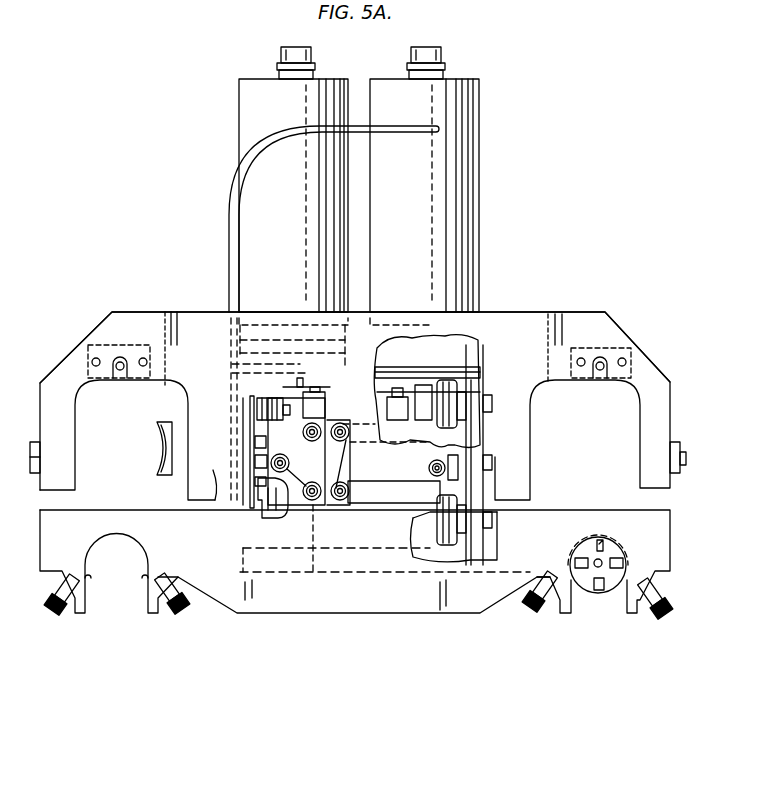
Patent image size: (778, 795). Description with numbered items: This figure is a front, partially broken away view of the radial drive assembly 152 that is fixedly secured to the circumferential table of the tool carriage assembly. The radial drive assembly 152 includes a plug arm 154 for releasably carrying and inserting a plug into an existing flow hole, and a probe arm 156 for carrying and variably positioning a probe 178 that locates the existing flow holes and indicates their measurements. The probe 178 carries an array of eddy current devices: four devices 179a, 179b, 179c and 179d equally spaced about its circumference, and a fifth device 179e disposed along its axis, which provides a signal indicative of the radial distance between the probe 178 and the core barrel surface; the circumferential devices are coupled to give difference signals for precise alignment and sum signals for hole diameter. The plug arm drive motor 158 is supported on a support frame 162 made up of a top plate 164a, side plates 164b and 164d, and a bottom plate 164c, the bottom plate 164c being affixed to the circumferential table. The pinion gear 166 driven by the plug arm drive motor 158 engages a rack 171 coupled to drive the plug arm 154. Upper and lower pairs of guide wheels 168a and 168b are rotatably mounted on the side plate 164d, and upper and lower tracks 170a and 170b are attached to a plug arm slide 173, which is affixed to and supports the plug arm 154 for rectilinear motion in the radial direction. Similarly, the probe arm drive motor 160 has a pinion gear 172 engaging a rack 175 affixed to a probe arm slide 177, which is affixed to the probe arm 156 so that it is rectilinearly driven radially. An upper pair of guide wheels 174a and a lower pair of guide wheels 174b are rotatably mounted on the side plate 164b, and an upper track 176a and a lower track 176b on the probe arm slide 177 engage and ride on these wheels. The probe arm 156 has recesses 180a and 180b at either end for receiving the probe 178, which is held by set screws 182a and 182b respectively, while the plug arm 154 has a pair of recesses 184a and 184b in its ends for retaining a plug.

The radial drive assembly 152 is at (172, 249).
The plug arm 154 is at (612, 320).
The probe arm 156 is at (668, 545).
The plug arm drive motor 158 is at (458, 221).
The probe arm drive motor 160 is at (240, 117).
The support frame 162 is at (452, 338).
The top plate 164a is at (390, 326).
The side plate 164b is at (228, 430).
The bottom plate 164c is at (281, 586).
The side plate 164d is at (473, 437).
The pinion gear 166 is at (431, 468).
The upper pair of guide wheels 168a is at (470, 385).
The lower pair of guide wheels 168b is at (442, 576).
The upper track 170a is at (460, 426).
The lower track 170b is at (440, 481).
The rack 171 is at (387, 407).
The pinion gear 172 is at (290, 380).
The plug arm slide 173 is at (405, 437).
The upper pair of guide wheels 174a is at (247, 398).
The lower pair of guide wheels 174b is at (250, 508).
The rack 175 is at (330, 392).
The upper track 176a is at (256, 443).
The lower track 176b is at (246, 500).
The probe arm slide 177 is at (271, 512).
The probe 178 is at (612, 590).
The eddy current device 179a is at (613, 538).
The eddy current device 179b is at (627, 549).
The eddy current device 179c is at (598, 590).
The eddy current device 179d is at (580, 557).
The eddy current device 179e is at (594, 566).
The recess 180a is at (571, 605).
The recess 180b is at (88, 600).
The set screws 182a is at (668, 598).
The set screws 182b is at (183, 604).
The recess 184a is at (640, 432).
The recess 184b is at (77, 441).